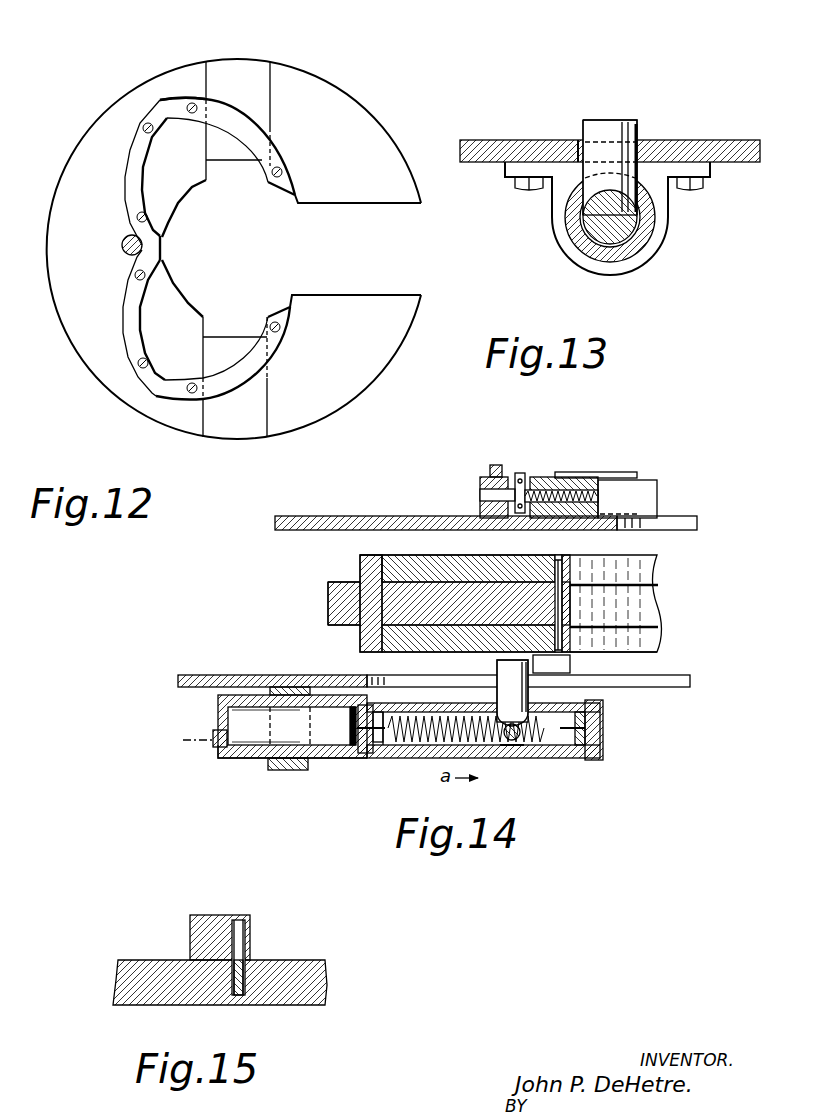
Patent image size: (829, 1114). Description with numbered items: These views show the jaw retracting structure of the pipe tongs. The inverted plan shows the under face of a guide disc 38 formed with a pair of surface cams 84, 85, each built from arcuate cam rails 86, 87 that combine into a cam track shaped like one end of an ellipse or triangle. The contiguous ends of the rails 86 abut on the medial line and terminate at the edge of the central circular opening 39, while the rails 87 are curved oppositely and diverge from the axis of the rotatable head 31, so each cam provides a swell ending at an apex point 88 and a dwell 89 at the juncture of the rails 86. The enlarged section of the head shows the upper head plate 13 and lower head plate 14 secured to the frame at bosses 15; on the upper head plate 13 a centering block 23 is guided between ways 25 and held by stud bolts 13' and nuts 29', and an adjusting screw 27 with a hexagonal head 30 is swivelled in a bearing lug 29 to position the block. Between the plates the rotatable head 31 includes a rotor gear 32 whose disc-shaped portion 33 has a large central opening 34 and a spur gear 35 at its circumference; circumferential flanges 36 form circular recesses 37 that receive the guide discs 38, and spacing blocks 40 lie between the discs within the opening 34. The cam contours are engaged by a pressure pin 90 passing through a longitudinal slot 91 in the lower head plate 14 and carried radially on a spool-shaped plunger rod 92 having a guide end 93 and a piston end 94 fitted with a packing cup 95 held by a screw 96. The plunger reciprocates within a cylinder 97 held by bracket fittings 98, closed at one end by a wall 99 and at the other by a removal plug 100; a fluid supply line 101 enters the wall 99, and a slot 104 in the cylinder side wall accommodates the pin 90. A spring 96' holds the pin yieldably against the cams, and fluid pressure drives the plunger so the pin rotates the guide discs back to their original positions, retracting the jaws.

In FIG. 14, the upper head plate 13 is at (486, 490).
In FIG. 14, the stud bolts 13' is at (499, 456).
In FIG. 13, the lower head plate 14 is at (727, 152).
In FIG. 14, the lower head plate 14 is at (200, 675).
In FIG. 12, the bosses 15 is at (177, 175).
In FIG. 14, the centering block 23 is at (618, 496).
In FIG. 14, the ways 25 is at (622, 473).
In FIG. 14, the adjusting screw 27 is at (548, 478).
In FIG. 14, the bearing lug 29 is at (480, 497).
In FIG. 14, the nuts 29' is at (529, 480).
In FIG. 14, the hexagonal head 30 is at (372, 575).
In FIG. 14, the rotatable head 31 is at (668, 596).
In FIG. 14, the rotor gear 32 is at (341, 578).
In FIG. 14, the disc-shaped portion 33 is at (447, 602).
In FIG. 14, the central opening 34 is at (568, 585).
In FIG. 14, the spur gear 35 is at (328, 608).
In FIG. 14, the circumferential flanges 36 is at (360, 640).
In FIG. 14, the circular recesses 37 is at (386, 573).
In FIG. 12, the guide discs 38 is at (327, 105).
In FIG. 14, the guide discs 38 is at (448, 642).
In FIG. 14, the central circular opening 39 is at (600, 656).
In FIG. 14, the spacing blocks 40 is at (570, 614).
In FIG. 12, the surface cam 84 is at (182, 92).
In FIG. 15, the surface cam 84 is at (135, 968).
In FIG. 12, the surface cam 85 is at (126, 355).
In FIG. 12, the arcuate cam rails 86 is at (155, 112).
In FIG. 15, the arcuate cam rails 86 is at (207, 915).
In FIG. 12, the arcuate cam rails 87 is at (232, 117).
In FIG. 14, the arcuate cam rails 87 is at (562, 667).
In FIG. 12, the apex point 88 is at (162, 96).
In FIG. 12, the dwell 89 is at (142, 243).
In FIG. 12, the pressure pin 90 is at (124, 250).
In FIG. 13, the pressure pin 90 is at (622, 133).
In FIG. 14, the pressure pin 90 is at (525, 722).
In FIG. 13, the slot 91 is at (578, 145).
In FIG. 14, the plunger rod 92 is at (420, 760).
In FIG. 14, the guide end 93 is at (603, 718).
In FIG. 14, the piston end 94 is at (355, 756).
In FIG. 14, the packing cup 95 is at (337, 758).
In FIG. 14, the screw 96 is at (356, 773).
In FIG. 14, the spring 96' is at (530, 761).
In FIG. 14, the cylinder 97 is at (252, 760).
In FIG. 13, the bracket fittings 98 is at (660, 190).
In FIG. 14, the bracket fittings 98 is at (278, 770).
In FIG. 14, the closed-in wall 99 is at (218, 720).
In FIG. 14, the removal plug 100 is at (603, 745).
In FIG. 14, the fluid supply line 101 is at (212, 742).
In FIG. 14, the slot 104 is at (500, 746).